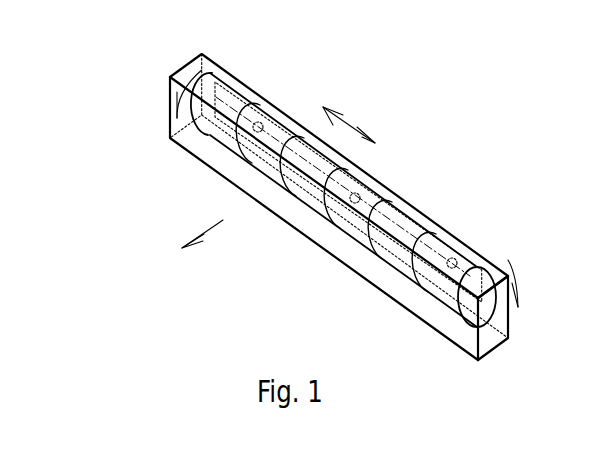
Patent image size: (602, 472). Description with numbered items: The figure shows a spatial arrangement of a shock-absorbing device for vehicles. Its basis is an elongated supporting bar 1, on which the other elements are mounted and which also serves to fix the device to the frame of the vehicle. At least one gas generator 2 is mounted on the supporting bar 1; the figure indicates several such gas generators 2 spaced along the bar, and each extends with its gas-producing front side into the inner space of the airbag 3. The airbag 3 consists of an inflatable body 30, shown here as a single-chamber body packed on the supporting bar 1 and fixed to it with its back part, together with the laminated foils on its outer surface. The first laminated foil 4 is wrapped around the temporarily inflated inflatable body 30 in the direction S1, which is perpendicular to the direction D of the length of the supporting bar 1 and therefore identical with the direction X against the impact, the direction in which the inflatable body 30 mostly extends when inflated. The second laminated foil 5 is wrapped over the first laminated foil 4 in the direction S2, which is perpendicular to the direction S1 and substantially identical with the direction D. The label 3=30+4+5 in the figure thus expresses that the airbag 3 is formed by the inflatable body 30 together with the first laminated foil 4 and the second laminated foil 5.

The supporting bar 1 is at (238, 97).
The gas generator 2 is at (264, 123).
The airbag 3 is at (266, 207).
The inflatable body 30 is at (339, 176).
The first laminated foil 4 is at (324, 218).
The second laminated foil 5 is at (493, 318).
The wrapping direction of the first laminated foil S1 is at (195, 88).
The wrapping direction of the second laminated foil S2 is at (532, 283).
The direction of the length of the supporting bar D is at (349, 116).
The direction against the impact X is at (198, 230).